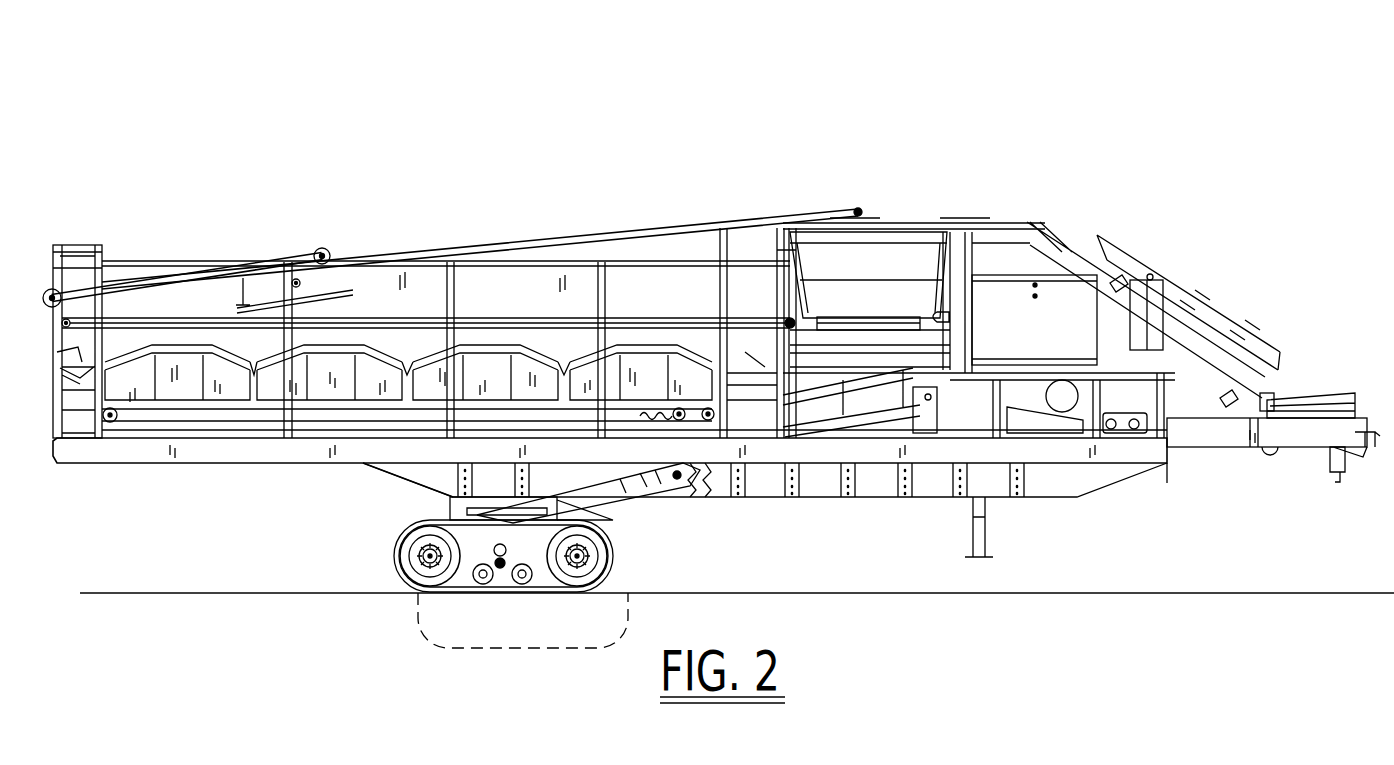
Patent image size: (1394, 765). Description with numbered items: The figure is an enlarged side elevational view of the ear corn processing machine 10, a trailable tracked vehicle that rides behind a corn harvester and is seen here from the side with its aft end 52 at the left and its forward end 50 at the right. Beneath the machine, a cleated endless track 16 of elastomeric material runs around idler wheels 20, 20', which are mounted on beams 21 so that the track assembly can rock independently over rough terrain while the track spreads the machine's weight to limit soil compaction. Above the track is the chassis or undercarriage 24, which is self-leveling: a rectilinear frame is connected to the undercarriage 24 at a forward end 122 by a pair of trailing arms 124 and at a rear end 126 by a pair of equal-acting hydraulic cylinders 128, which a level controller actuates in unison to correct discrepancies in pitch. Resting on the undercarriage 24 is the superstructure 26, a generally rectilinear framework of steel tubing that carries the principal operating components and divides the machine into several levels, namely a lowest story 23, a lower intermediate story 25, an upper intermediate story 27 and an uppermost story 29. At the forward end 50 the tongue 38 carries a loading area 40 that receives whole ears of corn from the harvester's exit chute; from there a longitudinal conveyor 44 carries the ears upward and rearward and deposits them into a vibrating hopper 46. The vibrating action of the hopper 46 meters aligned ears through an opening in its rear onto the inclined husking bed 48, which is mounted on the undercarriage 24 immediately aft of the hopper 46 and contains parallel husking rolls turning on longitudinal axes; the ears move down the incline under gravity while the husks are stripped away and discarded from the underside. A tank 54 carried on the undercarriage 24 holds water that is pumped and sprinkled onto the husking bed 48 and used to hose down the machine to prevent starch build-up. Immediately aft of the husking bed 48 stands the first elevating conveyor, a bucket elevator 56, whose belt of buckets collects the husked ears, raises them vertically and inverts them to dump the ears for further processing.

The ear corn processing machine 10 is at (583, 96).
The cleated endless track 16 is at (497, 584).
The idler wheel 20 is at (603, 556).
The idler wheel 20' is at (397, 556).
The beam 21 is at (477, 593).
The lowest story 23 is at (725, 395).
The undercarriage 24 is at (865, 487).
The lower intermediate story 25 is at (768, 395).
The superstructure 26 is at (672, 248).
The upper intermediate story 27 is at (745, 352).
The uppermost story 29 is at (757, 268).
The tongue 38 is at (1333, 450).
The loading area 40 is at (1300, 410).
The longitudinal conveyor 44 is at (1205, 360).
The vibrating hopper 46 is at (1056, 296).
The inclined husking bed 48 is at (913, 390).
The forward end 50 is at (1378, 447).
The aft end 52 is at (52, 446).
The tank 54 is at (1033, 433).
The bucket elevator 56 is at (768, 250).
The forward end 122 is at (693, 467).
The trailing arm 124 is at (650, 498).
The rear end 126 is at (387, 474).
The equal-acting hydraulic cylinder 128 is at (440, 507).